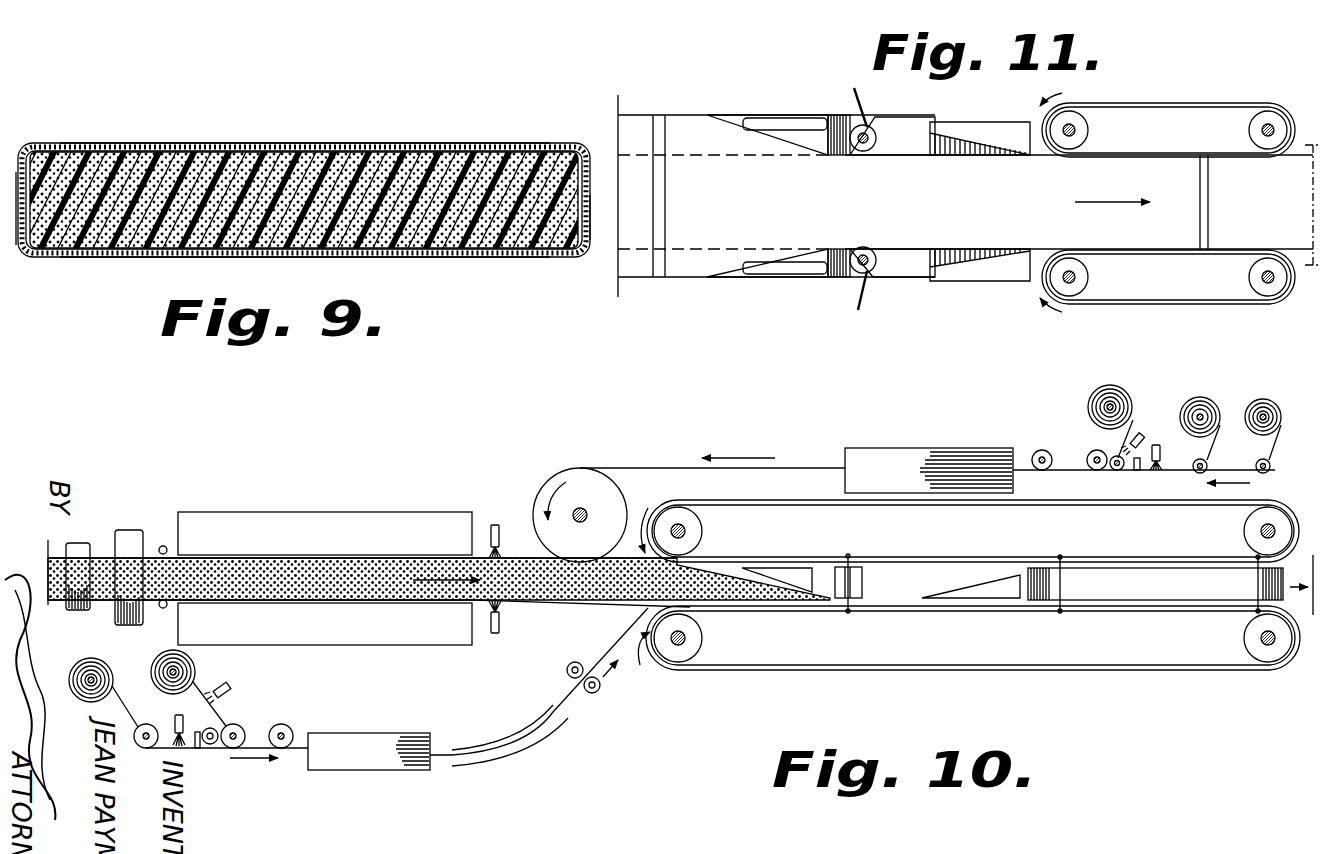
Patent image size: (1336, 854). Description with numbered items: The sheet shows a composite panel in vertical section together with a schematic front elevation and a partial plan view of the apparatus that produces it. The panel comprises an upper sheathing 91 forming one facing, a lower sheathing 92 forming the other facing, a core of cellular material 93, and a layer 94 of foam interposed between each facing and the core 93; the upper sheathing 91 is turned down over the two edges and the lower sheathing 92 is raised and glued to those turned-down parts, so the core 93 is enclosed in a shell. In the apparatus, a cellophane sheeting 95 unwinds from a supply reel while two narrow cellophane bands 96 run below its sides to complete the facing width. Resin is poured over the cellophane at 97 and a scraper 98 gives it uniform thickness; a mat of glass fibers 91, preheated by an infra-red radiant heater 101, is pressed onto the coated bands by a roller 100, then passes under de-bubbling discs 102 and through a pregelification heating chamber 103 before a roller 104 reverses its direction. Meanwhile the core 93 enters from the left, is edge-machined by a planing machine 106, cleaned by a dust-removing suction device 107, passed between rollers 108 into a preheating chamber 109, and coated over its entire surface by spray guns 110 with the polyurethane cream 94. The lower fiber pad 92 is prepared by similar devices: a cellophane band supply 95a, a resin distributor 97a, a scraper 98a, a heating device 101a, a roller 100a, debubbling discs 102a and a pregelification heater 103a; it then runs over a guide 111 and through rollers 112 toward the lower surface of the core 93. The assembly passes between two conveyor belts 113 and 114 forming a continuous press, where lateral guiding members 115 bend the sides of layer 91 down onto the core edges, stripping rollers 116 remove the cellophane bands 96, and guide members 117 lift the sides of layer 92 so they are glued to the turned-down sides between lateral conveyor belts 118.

In FIG. 9, the upper sheathing 91 is at (232, 145).
In FIG. 11, the upper sheathing 91 is at (668, 167).
In FIG. 10, the upper sheathing 91 is at (664, 467).
In FIG. 9, the lower sheathing 92 is at (108, 253).
In FIG. 11, the lower sheathing 92 is at (903, 133).
In FIG. 10, the lower sheathing 92 is at (213, 714).
In FIG. 9, the core of cellular material 93 is at (490, 215).
In FIG. 10, the core of cellular material 93 is at (50, 565).
In FIG. 9, the intermediate layer 94 is at (358, 150).
In FIG. 10, the intermediate layer 94 is at (540, 557).
In FIG. 10, the cellophane sheeting supply 95 is at (1220, 427).
In FIG. 11, the cellophane bands 96 is at (850, 88).
In FIG. 10, the cellophane bands 96 is at (1281, 430).
In FIG. 10, the resin pouring station 97 is at (1163, 462).
In FIG. 10, the scraper 98 is at (1133, 466).
In FIG. 10, the roller 100 is at (1090, 455).
In FIG. 10, the infra-red radiant heater 101 is at (1140, 436).
In FIG. 10, the de-bubbling discs 102 is at (1035, 455).
In FIG. 10, the pregelification heating chamber 103 is at (902, 457).
In FIG. 10, the roller 104 is at (568, 483).
In FIG. 10, the planing machine 106 is at (78, 605).
In FIG. 10, the dust-removing suction device 107 is at (122, 540).
In FIG. 10, the rollers 108 is at (165, 546).
In FIG. 10, the preheating chamber 109 is at (360, 490).
In FIG. 10, the spray guns 110 is at (492, 530).
In FIG. 10, the guide 111 is at (513, 742).
In FIG. 10, the rollers 112 is at (598, 693).
In FIG. 10, the conveyor belt 113 is at (993, 503).
In FIG. 10, the conveyor belt 114 is at (1018, 670).
In FIG. 11, the guiding members 115 is at (790, 90).
In FIG. 10, the guiding members 115 is at (793, 542).
In FIG. 11, the stripping rollers 116 is at (857, 150).
In FIG. 10, the stripping rollers 116 is at (860, 577).
In FIG. 11, the guide members 117 is at (987, 130).
In FIG. 10, the guide members 117 is at (985, 592).
In FIG. 11, the lateral conveyor belts 118 is at (1217, 87).
In FIG. 10, the lateral conveyor belts 118 is at (1170, 590).
In FIG. 10, the cellophane band supply 95a is at (122, 688).
In FIG. 10, the resin distributor 97a is at (173, 727).
In FIG. 10, the scraper 98a is at (196, 750).
In FIG. 10, the roller 100a is at (235, 748).
In FIG. 10, the heating device 101a is at (242, 674).
In FIG. 10, the debubbling discs 102a is at (285, 727).
In FIG. 10, the pregelification heater 103a is at (387, 756).